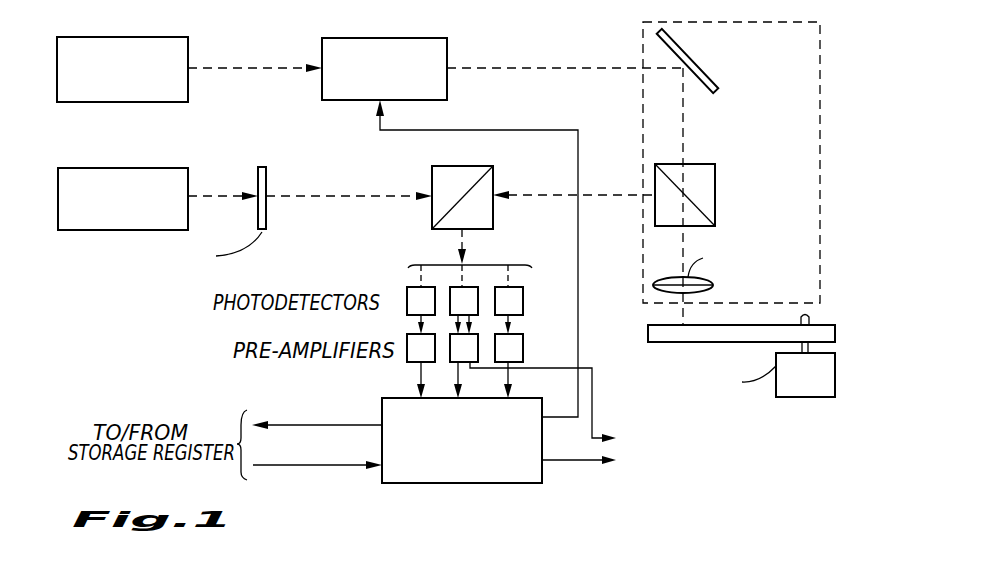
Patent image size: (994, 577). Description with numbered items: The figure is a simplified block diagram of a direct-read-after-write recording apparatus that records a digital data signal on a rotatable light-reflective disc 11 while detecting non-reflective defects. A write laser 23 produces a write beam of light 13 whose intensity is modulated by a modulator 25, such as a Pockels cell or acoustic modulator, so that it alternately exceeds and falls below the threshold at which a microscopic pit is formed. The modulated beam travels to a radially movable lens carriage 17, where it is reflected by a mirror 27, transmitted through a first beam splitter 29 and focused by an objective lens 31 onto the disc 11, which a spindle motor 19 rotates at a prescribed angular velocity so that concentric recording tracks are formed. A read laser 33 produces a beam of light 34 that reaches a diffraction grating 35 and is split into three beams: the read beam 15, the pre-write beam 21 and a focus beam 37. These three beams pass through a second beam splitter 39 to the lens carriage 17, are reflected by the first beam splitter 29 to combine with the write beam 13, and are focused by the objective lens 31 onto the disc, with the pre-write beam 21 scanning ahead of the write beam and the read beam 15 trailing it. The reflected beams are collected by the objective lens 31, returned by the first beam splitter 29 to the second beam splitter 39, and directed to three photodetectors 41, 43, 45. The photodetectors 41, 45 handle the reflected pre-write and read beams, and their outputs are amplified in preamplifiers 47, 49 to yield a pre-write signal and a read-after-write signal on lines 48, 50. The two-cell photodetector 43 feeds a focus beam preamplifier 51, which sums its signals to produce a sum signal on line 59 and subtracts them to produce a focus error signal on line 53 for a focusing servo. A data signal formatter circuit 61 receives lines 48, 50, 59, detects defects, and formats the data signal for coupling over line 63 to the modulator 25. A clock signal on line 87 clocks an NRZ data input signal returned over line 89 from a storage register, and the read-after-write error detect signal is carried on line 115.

The light-reflective disc 11 is at (656, 325).
The write beam of light 13 is at (493, 68).
The read beam of light 15 is at (298, 196).
The lens carriage 17 is at (731, 162).
The spindle motor 19 is at (778, 385).
The pre-write beam of light 21 is at (420, 280).
The write laser 23 is at (103, 37).
The modulator 25 is at (372, 38).
The mirror 27 is at (705, 89).
The first beam splitter 29 is at (715, 185).
The objective lens 31 is at (661, 279).
The read laser 33 is at (103, 168).
The beam of light 34 is at (228, 194).
The diffraction grating 35 is at (262, 167).
The focus beam 37 is at (462, 282).
The second beam splitter 39 is at (443, 166).
The photodetector 41 is at (421, 301).
The photodetector 43 is at (464, 301).
The photodetector 45 is at (509, 301).
The preamplifier 47 is at (421, 348).
The line 48 is at (419, 371).
The preamplifier 49 is at (509, 348).
The line 50 is at (510, 372).
The focus beam preamplifier 51 is at (464, 348).
The line 53 is at (605, 375).
The line 59 is at (462, 366).
The data signal formatter circuit 61 is at (456, 483).
The line 63 is at (578, 152).
The line 87 is at (278, 425).
The line 89 is at (294, 468).
The line 115 is at (566, 462).